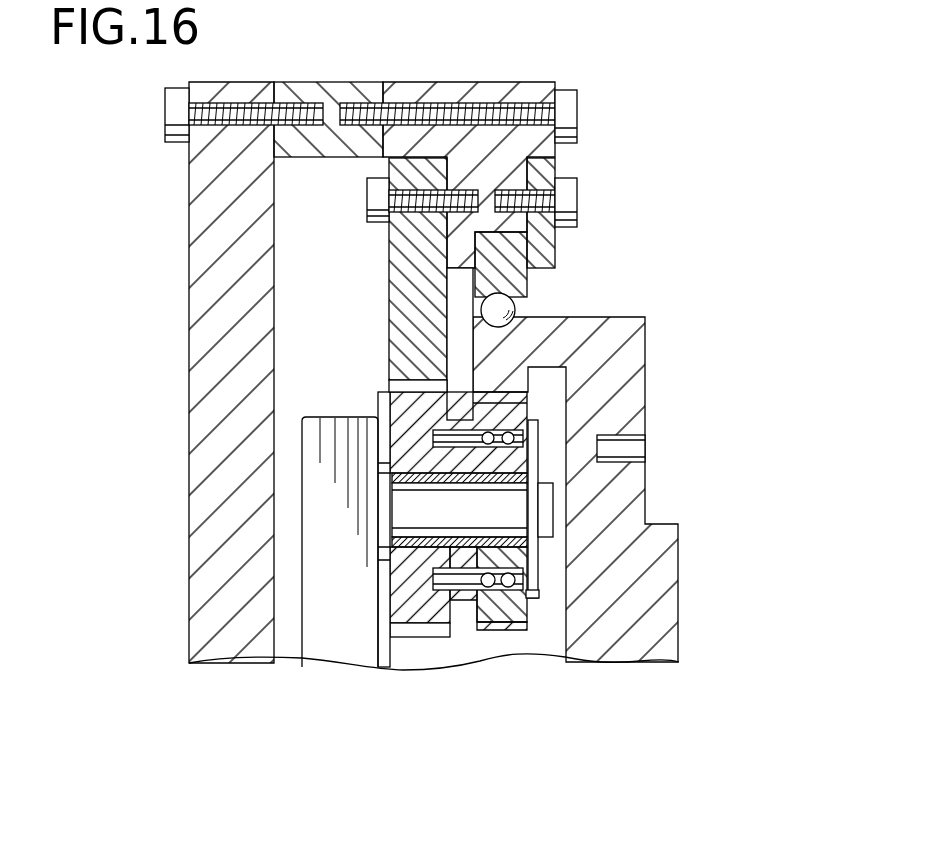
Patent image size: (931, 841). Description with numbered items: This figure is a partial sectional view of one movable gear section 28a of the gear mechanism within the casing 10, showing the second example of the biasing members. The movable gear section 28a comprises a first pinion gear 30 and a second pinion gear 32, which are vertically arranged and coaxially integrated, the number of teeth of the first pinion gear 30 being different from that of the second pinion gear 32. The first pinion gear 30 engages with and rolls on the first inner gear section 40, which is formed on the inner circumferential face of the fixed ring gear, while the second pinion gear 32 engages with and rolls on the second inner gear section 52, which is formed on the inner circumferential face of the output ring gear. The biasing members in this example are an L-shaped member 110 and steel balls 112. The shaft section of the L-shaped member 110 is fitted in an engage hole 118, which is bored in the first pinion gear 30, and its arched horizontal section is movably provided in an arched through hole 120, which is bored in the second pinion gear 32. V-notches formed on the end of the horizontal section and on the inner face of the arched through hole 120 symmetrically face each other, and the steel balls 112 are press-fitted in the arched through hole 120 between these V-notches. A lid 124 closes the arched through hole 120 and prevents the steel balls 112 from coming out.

The casing 10 is at (187, 228).
The movable gear section 28a is at (531, 618).
The first pinion gear 30 is at (423, 603).
The second pinion gear 32 is at (517, 636).
The first inner gear section 40 is at (385, 388).
The second inner gear section 52 is at (518, 395).
The L-shaped member 110 is at (392, 453).
The steel balls 112 is at (497, 430).
The engage hole 118 is at (435, 400).
The arched through hole 120 is at (537, 470).
The lid 124 is at (532, 560).